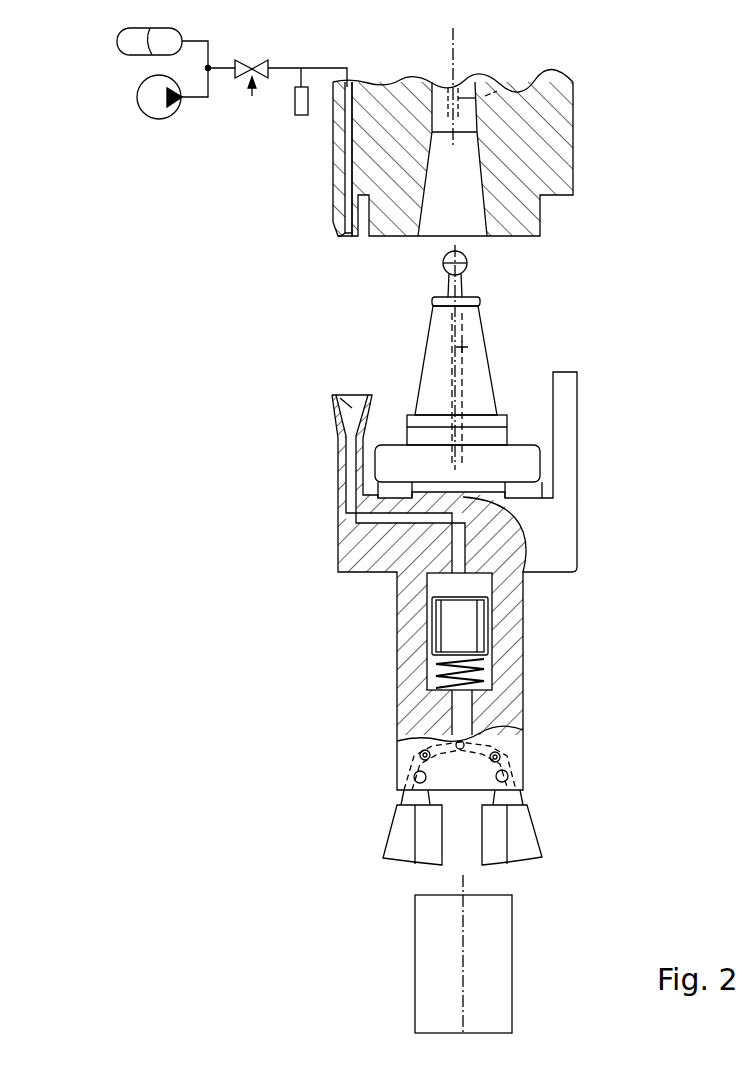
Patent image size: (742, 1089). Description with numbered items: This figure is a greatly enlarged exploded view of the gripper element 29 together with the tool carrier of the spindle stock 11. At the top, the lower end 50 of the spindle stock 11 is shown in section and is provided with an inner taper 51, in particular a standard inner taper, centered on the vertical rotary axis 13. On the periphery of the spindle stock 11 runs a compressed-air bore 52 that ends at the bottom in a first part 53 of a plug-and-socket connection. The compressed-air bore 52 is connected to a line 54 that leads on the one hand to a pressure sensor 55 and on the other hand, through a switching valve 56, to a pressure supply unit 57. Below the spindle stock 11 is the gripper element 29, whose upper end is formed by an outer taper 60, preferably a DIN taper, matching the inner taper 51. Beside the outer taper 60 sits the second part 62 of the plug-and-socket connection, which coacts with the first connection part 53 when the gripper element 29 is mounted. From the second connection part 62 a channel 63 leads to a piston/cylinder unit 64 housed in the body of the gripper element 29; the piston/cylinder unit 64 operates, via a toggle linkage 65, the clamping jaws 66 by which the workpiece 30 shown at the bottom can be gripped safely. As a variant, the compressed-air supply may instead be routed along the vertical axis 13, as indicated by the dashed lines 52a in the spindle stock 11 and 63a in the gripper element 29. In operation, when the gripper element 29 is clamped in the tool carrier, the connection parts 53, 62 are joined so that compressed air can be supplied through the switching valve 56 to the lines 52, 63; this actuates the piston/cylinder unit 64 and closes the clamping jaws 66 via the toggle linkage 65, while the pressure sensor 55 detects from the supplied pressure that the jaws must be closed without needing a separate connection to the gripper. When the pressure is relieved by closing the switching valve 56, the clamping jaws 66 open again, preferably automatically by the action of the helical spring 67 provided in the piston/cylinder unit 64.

The spindle stock 11 is at (497, 144).
The vertical axis 13 is at (462, 44).
The gripper element 29 is at (503, 626).
The workpiece 30 is at (547, 942).
The lower end of the spindle stock 50 is at (565, 152).
The inner taper 51 is at (474, 197).
The compressed-air bore 52 is at (333, 143).
The axial compressed-air line in the spindle stock 52a is at (487, 82).
The first part of a plug-and-socket connection 53 is at (337, 229).
The line 54 is at (322, 67).
The pressure sensor 55 is at (293, 107).
The switching valve 56 is at (247, 60).
The pressure supply unit 57 is at (135, 128).
The outer taper 60 is at (474, 371).
The second part of a plug-and-socket connection 62 is at (352, 393).
The channel 63 is at (362, 523).
The axial compressed-air line in the gripper element 63a is at (473, 347).
The piston/cylinder unit 64 is at (447, 622).
The toggle linkage 65 is at (523, 747).
The clamping jaws 66 is at (402, 853).
The helical spring 67 is at (480, 675).